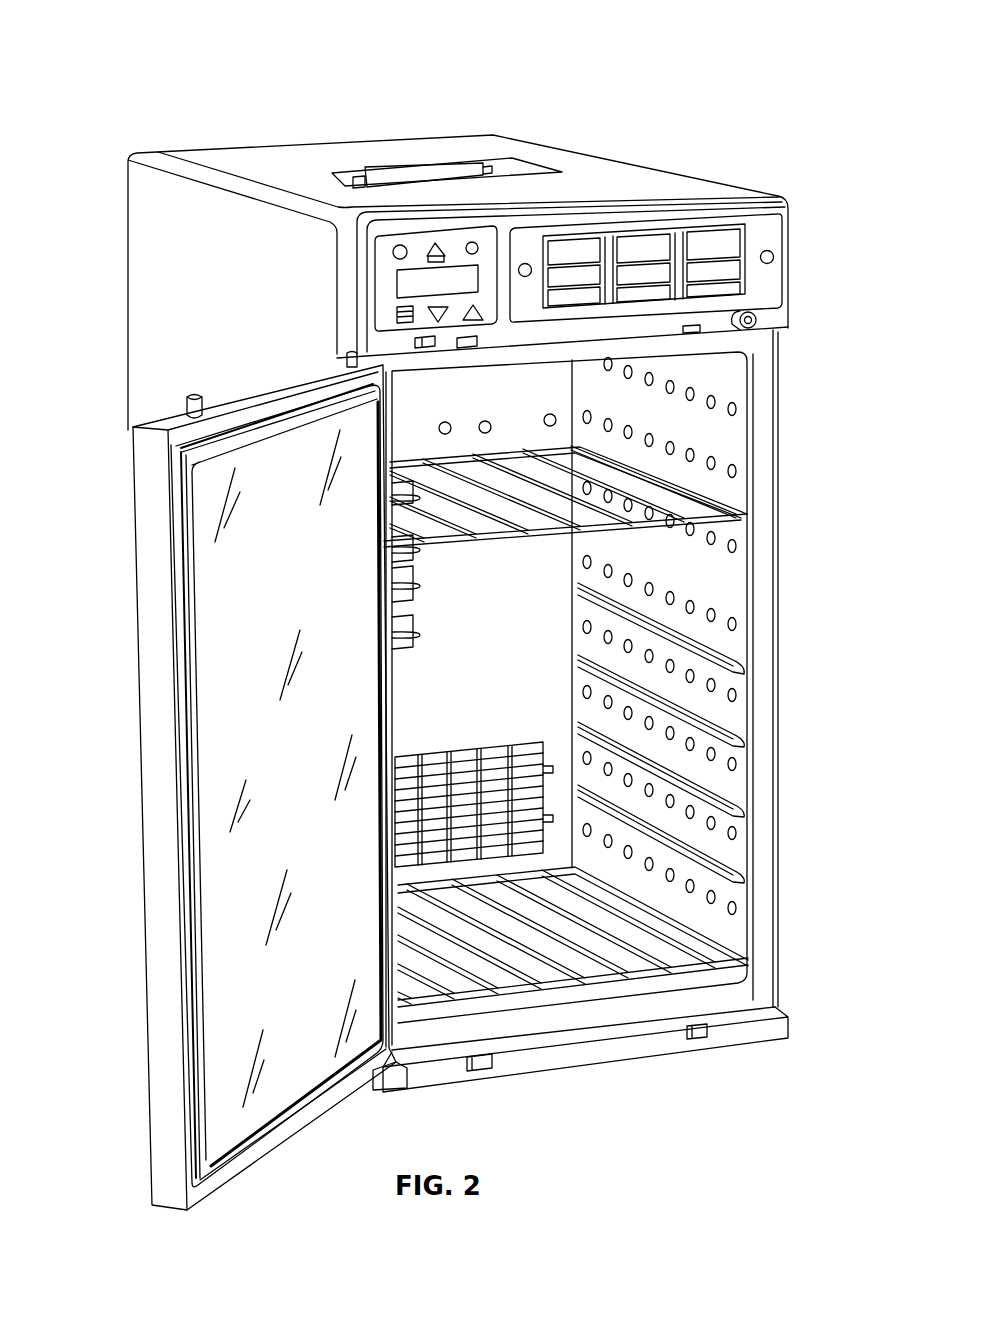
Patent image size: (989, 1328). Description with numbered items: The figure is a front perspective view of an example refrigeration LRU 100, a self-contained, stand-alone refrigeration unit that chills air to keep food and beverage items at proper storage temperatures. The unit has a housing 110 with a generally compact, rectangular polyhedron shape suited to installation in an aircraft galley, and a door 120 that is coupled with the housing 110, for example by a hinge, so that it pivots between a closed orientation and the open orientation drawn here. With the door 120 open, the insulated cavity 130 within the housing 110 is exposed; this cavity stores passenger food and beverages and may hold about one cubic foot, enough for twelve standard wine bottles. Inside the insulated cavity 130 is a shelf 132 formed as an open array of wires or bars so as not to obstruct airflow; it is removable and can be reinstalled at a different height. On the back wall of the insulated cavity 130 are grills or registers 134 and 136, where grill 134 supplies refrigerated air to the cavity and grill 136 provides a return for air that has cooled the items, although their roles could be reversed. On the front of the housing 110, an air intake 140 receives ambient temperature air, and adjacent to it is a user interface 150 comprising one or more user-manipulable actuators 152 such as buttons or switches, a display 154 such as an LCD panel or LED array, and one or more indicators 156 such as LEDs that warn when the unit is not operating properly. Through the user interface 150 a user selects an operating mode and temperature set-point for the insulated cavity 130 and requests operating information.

The refrigeration LRU 100 is at (121, 50).
The housing 110 is at (148, 232).
The door 120 is at (153, 466).
The insulated cavity 130 is at (723, 700).
The shelf 132 is at (509, 538).
The grill 134 is at (420, 618).
The grill 136 is at (465, 749).
The air intake 140 is at (728, 258).
The user interface 150 is at (430, 244).
The user-manipulable actuators 152 is at (395, 318).
The display 154 is at (398, 287).
The indicators 156 is at (393, 253).